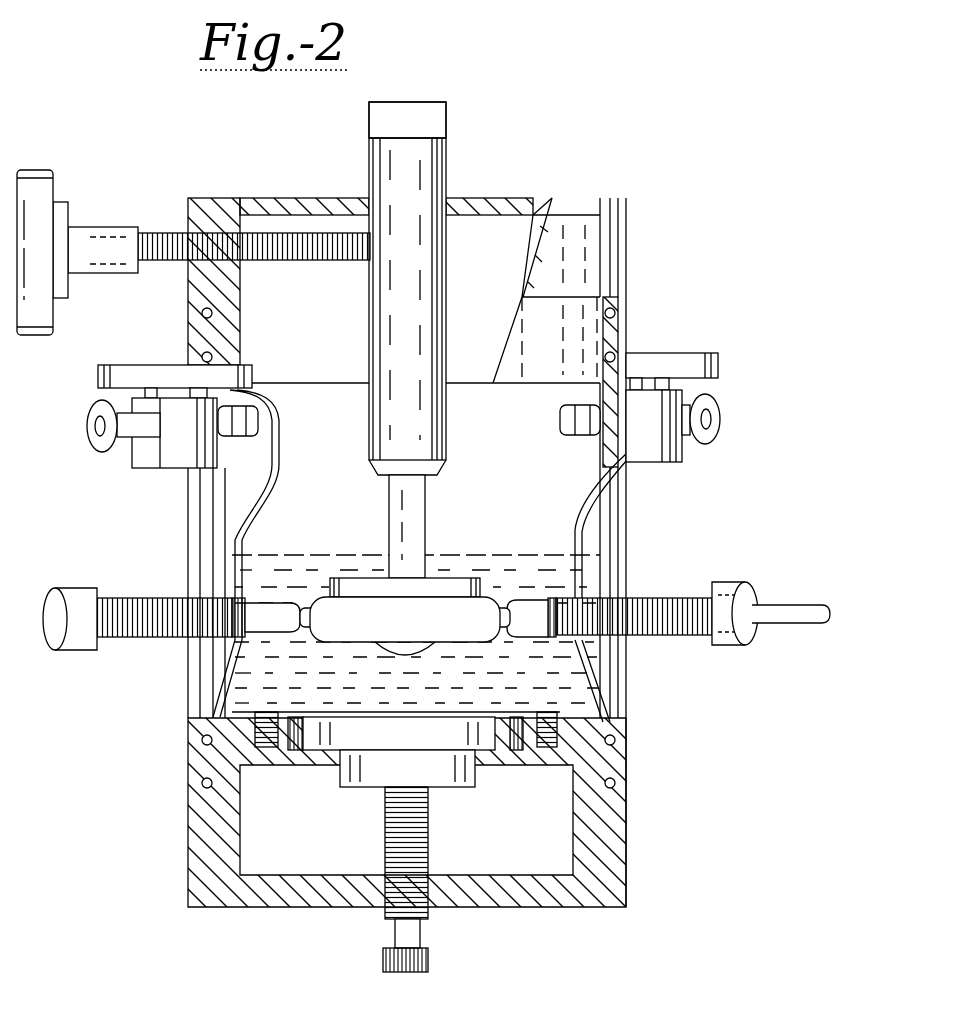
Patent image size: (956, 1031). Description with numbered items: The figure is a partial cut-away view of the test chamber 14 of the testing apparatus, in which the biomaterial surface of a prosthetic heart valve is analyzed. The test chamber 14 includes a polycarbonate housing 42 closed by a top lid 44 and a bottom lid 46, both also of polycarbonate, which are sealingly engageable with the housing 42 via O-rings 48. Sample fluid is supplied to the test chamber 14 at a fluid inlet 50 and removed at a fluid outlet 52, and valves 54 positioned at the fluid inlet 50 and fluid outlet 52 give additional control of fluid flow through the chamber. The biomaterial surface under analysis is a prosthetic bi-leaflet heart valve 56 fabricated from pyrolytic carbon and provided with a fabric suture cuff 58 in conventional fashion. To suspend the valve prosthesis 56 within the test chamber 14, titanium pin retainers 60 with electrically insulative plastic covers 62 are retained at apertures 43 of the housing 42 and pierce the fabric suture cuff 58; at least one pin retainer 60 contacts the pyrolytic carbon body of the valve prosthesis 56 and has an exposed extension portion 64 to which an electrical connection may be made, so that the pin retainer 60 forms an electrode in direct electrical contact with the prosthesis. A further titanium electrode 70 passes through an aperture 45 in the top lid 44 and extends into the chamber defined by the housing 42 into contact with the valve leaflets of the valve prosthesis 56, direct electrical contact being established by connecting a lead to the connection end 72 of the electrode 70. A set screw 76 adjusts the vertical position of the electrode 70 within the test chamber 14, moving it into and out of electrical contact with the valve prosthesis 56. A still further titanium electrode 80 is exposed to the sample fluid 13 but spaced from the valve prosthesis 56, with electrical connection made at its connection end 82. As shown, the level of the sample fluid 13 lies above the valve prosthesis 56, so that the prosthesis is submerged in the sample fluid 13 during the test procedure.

The sample fluid 13 is at (416, 629).
The test chamber 14 is at (428, 493).
The polycarbonate housing 42 is at (187, 482).
The apertures 43 is at (222, 572).
The top lid 44 is at (213, 197).
The aperture 45 is at (448, 197).
The bottom lid 46 is at (625, 856).
The O-rings 48 is at (192, 320).
The fluid inlet 50 is at (94, 420).
The fluid outlet 52 is at (396, 413).
The valves 54 is at (138, 364).
The prosthetic bi-leaflet heart valve 56 is at (455, 577).
The fabric suture cuff 58 is at (422, 628).
The titanium pin retainer 60 is at (313, 577).
The electrically insulative plastic covers 62 is at (448, 586).
The exposed extension portion 64 is at (785, 604).
The electrode 70 is at (474, 271).
The connection end 72 is at (415, 118).
The set screw 76 is at (108, 210).
The electrode 80 is at (467, 716).
The connection end 82 is at (430, 962).